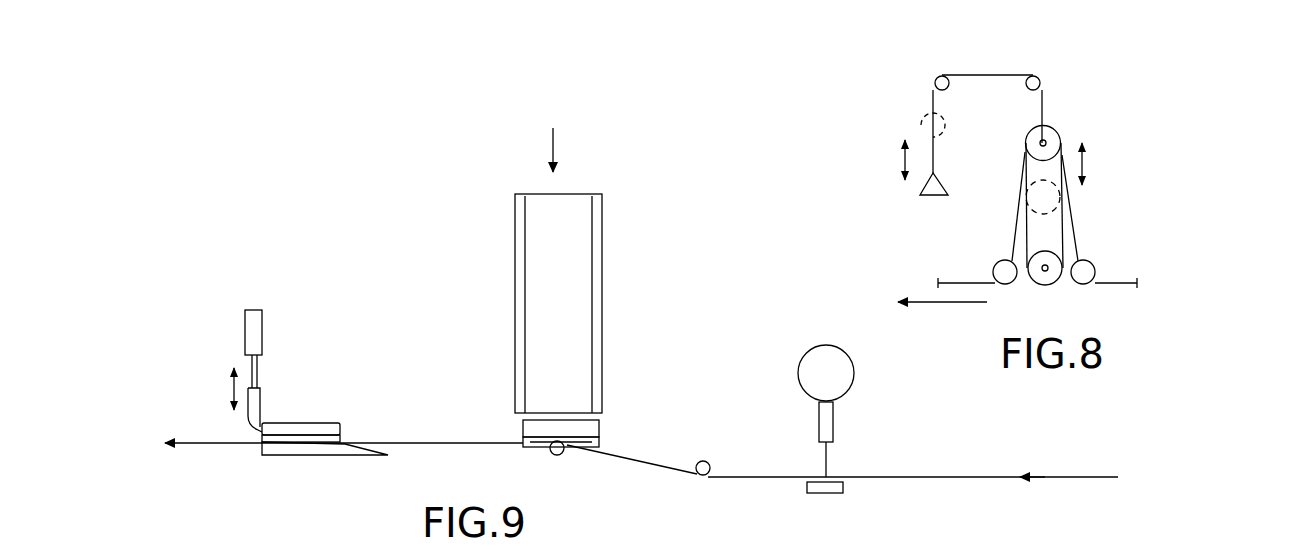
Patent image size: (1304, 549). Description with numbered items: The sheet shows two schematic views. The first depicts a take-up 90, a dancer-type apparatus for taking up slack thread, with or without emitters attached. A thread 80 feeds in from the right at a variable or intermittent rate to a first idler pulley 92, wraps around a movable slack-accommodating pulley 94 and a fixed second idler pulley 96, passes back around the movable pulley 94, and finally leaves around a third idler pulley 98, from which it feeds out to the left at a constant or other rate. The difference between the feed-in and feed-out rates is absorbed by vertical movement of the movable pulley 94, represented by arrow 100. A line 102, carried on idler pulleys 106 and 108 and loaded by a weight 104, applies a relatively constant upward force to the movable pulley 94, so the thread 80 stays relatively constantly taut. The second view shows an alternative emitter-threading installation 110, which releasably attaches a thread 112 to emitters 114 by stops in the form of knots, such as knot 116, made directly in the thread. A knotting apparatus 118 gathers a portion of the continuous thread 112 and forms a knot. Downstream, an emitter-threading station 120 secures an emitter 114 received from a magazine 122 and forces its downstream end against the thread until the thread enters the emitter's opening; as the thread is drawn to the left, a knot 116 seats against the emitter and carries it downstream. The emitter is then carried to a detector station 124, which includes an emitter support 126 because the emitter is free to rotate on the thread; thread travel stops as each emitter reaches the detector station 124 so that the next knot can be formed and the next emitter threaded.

In FIG. 8, the thread 80 is at (1133, 282).
In FIG. 8, the take-up 90 is at (1125, 153).
In FIG. 8, the first idler pulley 92 is at (1095, 268).
In FIG. 8, the movable slack-accommodating pulley 94 is at (1053, 133).
In FIG. 8, the fixed second idler pulley 96 is at (1046, 287).
In FIG. 8, the third idler pulley 98 is at (995, 264).
In FIG. 8, the arrow 100 is at (1087, 165).
In FIG. 8, the line 102 is at (977, 73).
In FIG. 8, the weight 104 is at (928, 113).
In FIG. 8, the idler pulley 106 is at (1041, 79).
In FIG. 8, the idler pulley 108 is at (936, 78).
In FIG. 9, the emitter-threading installation 110 is at (253, 217).
In FIG. 9, the thread 112 is at (952, 476).
In FIG. 9, the emitter 114 is at (318, 423).
In FIG. 9, the knot 116 is at (530, 447).
In FIG. 9, the knotting apparatus 118 is at (803, 412).
In FIG. 9, the emitter-threading station 120 is at (635, 322).
In FIG. 9, the magazine 122 is at (602, 247).
In FIG. 9, the detector station 124 is at (282, 347).
In FIG. 9, the emitter support 126 is at (320, 456).